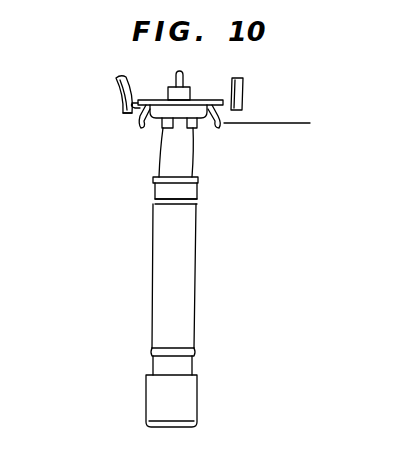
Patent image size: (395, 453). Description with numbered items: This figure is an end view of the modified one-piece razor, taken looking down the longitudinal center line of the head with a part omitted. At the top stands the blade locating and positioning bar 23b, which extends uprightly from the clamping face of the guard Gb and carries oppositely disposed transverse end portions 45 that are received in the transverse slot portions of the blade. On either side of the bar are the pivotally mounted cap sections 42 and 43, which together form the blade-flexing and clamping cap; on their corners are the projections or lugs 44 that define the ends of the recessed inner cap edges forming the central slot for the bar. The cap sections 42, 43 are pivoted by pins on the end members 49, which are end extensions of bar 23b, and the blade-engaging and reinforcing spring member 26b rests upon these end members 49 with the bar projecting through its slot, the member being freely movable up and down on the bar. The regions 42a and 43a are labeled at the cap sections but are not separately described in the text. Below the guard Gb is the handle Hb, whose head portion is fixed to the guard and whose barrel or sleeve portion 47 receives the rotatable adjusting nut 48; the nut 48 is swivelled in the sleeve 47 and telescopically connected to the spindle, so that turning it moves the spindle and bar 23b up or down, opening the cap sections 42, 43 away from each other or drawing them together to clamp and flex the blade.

The blade locating and positioning bar 23b is at (177, 72).
The transverse end portions 45 is at (187, 87).
The cap section 43 is at (242, 102).
The plate edge 43a is at (289, 126).
The blade-engaging and reinforcing spring member 26b is at (137, 117).
The guard Gb is at (222, 124).
The cap section 42 is at (116, 95).
The arm base 42a is at (125, 126).
The projections or lugs 44 is at (243, 78).
The end members 49 is at (143, 123).
The handle Hb is at (200, 178).
The barrel or sleeve portion 47 is at (196, 250).
The rotatable adjusting nut 48 is at (197, 391).